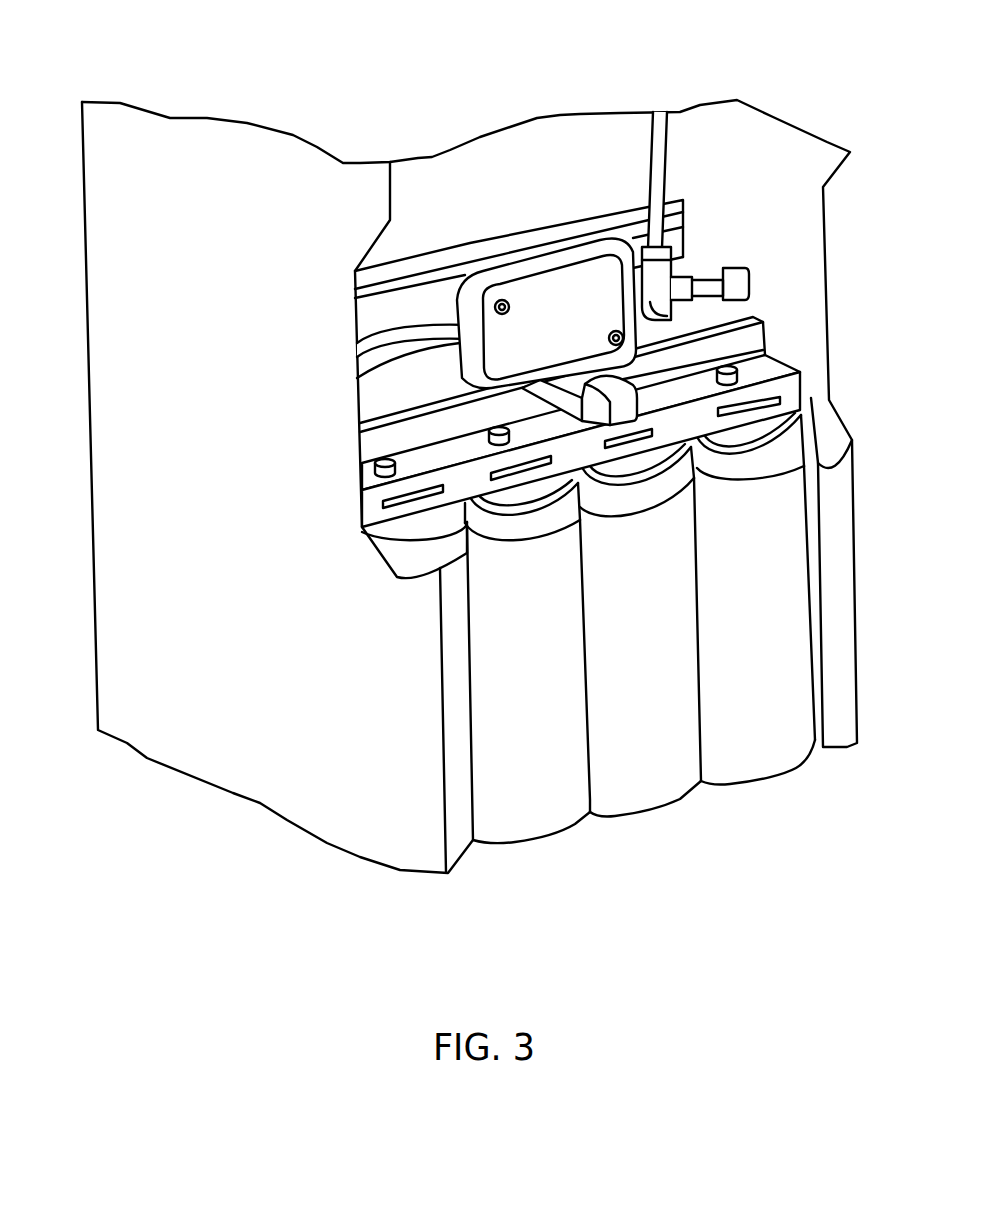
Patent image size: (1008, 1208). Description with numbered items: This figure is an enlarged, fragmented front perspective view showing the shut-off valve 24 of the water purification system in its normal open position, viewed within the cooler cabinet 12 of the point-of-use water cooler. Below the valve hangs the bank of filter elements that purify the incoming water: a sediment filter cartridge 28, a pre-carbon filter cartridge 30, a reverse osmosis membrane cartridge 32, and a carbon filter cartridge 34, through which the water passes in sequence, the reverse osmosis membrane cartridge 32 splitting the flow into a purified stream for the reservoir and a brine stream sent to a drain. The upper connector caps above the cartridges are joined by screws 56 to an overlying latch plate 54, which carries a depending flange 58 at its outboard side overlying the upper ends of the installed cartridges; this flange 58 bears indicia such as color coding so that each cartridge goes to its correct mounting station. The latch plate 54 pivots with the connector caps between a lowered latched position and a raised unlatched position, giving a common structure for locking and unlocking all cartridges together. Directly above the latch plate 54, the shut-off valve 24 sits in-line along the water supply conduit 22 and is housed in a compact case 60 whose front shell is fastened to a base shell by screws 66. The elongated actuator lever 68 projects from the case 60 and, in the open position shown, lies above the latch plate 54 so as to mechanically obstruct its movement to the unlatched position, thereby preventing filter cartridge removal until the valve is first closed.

The cooler cabinet 12 is at (145, 559).
The water supply conduit 22 is at (403, 333).
The shut-off valve 24 is at (550, 266).
The sediment filter cartridge 28 is at (791, 460).
The pre-carbon filter cartridge 30 is at (657, 512).
The reverse osmosis membrane cartridge 32 is at (530, 527).
The carbon filter cartridge 34 is at (442, 548).
The latch plate 54 is at (770, 363).
The screws 56 is at (383, 457).
The depending flange 58 is at (360, 517).
The case 60 is at (488, 268).
The screws 66 is at (613, 334).
The actuator lever 68 is at (633, 425).